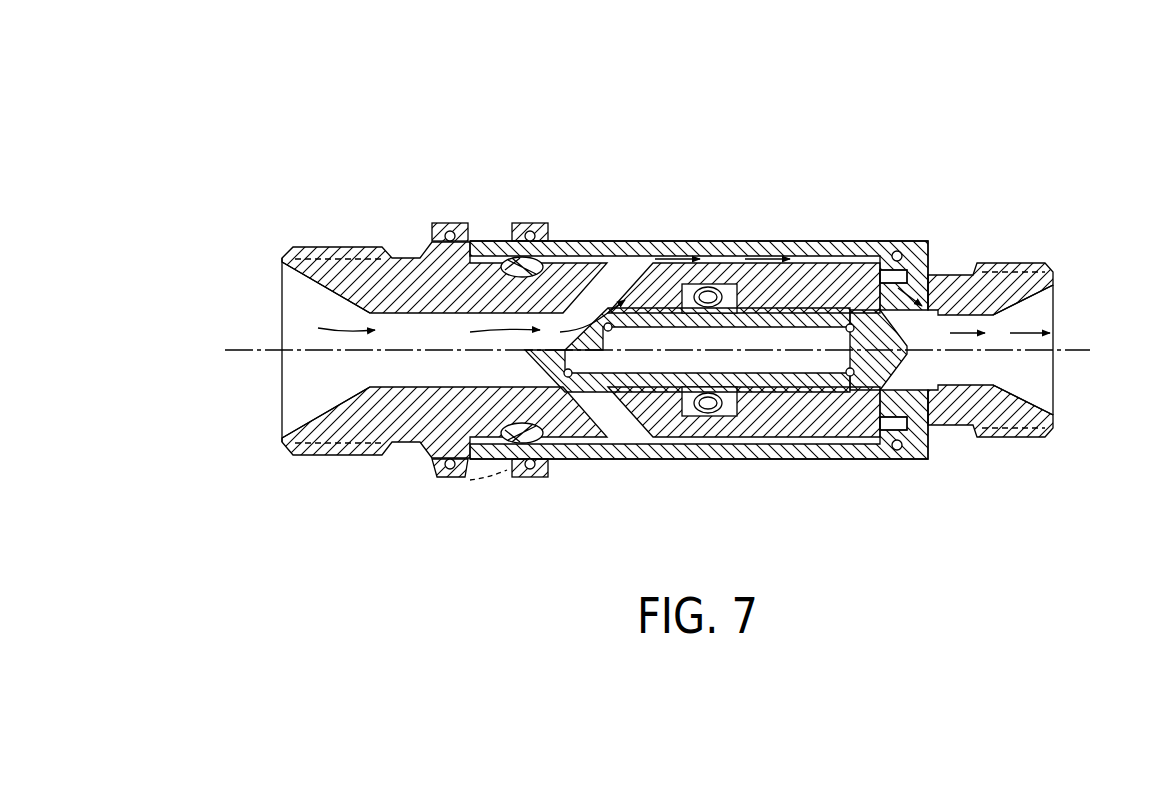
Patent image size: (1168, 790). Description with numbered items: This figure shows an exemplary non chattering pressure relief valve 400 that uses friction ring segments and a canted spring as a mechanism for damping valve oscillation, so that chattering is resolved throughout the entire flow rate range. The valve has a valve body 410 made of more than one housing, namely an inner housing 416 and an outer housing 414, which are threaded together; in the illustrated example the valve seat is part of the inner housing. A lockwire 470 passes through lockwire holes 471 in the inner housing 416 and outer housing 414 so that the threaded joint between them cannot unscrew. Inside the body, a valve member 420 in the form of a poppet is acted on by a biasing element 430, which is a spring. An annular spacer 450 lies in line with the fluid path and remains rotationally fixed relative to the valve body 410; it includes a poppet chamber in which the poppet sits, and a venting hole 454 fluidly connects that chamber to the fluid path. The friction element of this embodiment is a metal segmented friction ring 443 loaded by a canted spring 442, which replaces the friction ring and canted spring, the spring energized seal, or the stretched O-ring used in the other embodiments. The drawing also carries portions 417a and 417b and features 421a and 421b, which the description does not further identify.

The non chattering pressure relief valve 400 is at (670, 301).
The valve body 410 is at (851, 461).
The outer housing 414 is at (835, 241).
The inner housing 416 is at (420, 262).
The inlet fitting 417a is at (282, 408).
The outlet fitting 417b is at (1055, 384).
The valve member 420 is at (608, 434).
The inlet port 421a is at (326, 244).
The outlet port 421b is at (1010, 261).
The biasing element 430 is at (815, 438).
The canted spring 442 is at (712, 412).
The metal segmented friction ring 443 is at (690, 414).
The spacer 450 is at (762, 268).
The venting hole 454 is at (940, 430).
The lockwire 470 is at (493, 488).
The lockwire holes 471 is at (445, 472).